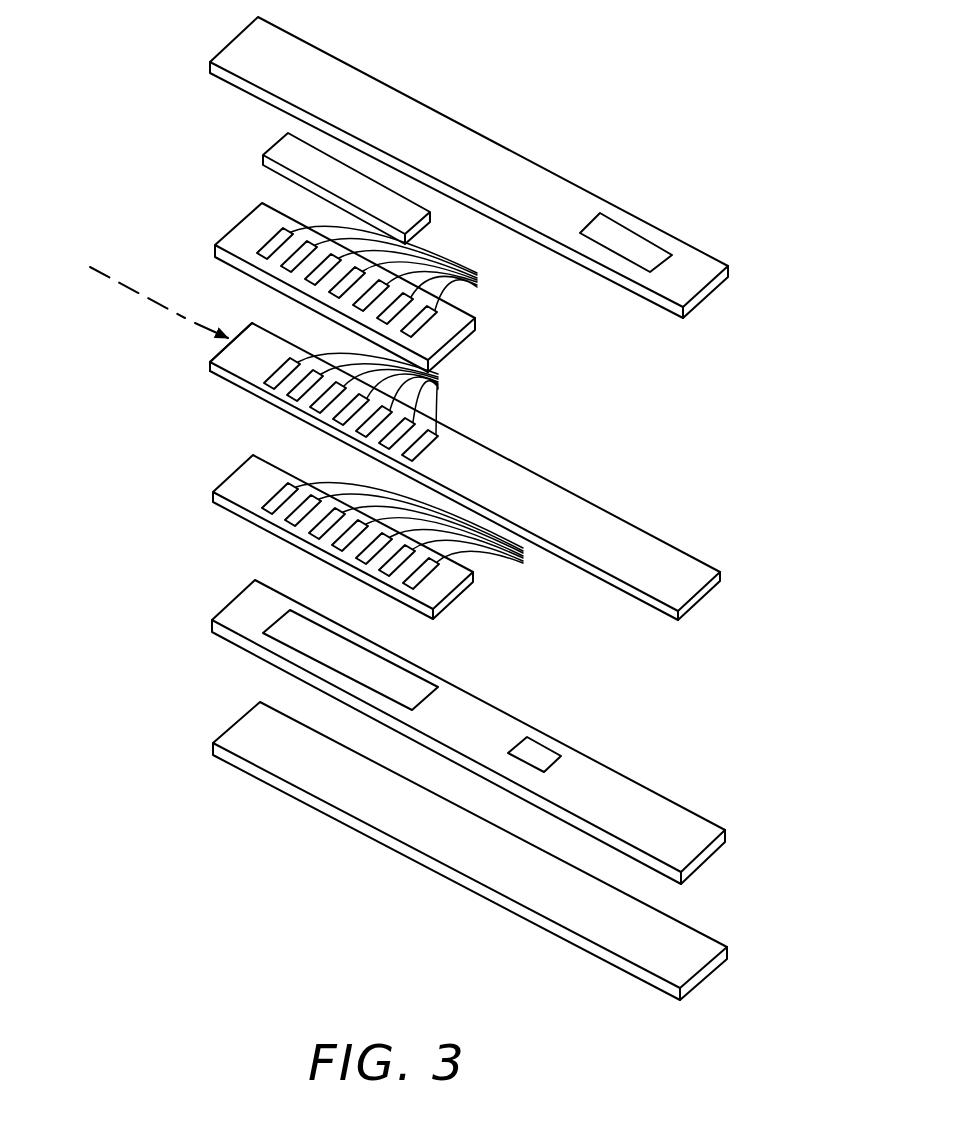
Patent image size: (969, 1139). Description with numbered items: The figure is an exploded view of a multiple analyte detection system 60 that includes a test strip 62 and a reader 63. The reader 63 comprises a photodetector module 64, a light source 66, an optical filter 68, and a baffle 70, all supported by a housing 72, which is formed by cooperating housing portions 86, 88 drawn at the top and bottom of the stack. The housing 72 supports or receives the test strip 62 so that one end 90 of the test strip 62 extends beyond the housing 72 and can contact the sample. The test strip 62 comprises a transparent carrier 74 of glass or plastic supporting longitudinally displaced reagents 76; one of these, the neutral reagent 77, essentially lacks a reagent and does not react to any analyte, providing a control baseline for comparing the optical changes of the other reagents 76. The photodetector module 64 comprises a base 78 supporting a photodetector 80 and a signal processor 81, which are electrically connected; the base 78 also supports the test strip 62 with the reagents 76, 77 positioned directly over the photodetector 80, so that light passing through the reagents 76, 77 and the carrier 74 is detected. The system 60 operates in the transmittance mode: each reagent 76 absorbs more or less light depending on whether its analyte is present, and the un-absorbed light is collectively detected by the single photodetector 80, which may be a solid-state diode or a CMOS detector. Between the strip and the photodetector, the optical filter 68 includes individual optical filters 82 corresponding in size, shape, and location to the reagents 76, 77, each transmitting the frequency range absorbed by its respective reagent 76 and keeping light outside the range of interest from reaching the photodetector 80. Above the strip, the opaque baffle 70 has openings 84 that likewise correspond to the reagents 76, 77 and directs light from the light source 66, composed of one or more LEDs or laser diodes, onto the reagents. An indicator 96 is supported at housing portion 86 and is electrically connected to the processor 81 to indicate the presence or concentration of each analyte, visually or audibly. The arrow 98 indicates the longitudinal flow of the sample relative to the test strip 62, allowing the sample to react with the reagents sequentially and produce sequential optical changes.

The multiple analyte detection system 60 is at (598, 83).
The test strip 62 is at (588, 498).
The reader 63 is at (712, 300).
The photodetector module 64 is at (627, 770).
The light source 66 is at (288, 163).
The optical filter 68 is at (450, 583).
The baffle 70 is at (467, 332).
The housing 72 is at (233, 38).
The carrier 74 is at (473, 452).
The reagents 76 is at (389, 393).
The neutral reagent 77 is at (260, 388).
The base 78 is at (467, 703).
The photodetector 80 is at (347, 640).
The signal processor 81 is at (557, 752).
The optical filters 82 is at (427, 533).
The openings 84 is at (404, 268).
The housing portion 86 is at (363, 77).
The housing portion 88 is at (422, 842).
The end of test strip 90 is at (237, 333).
The indicator 96 is at (617, 228).
The arrow 98 is at (78, 259).